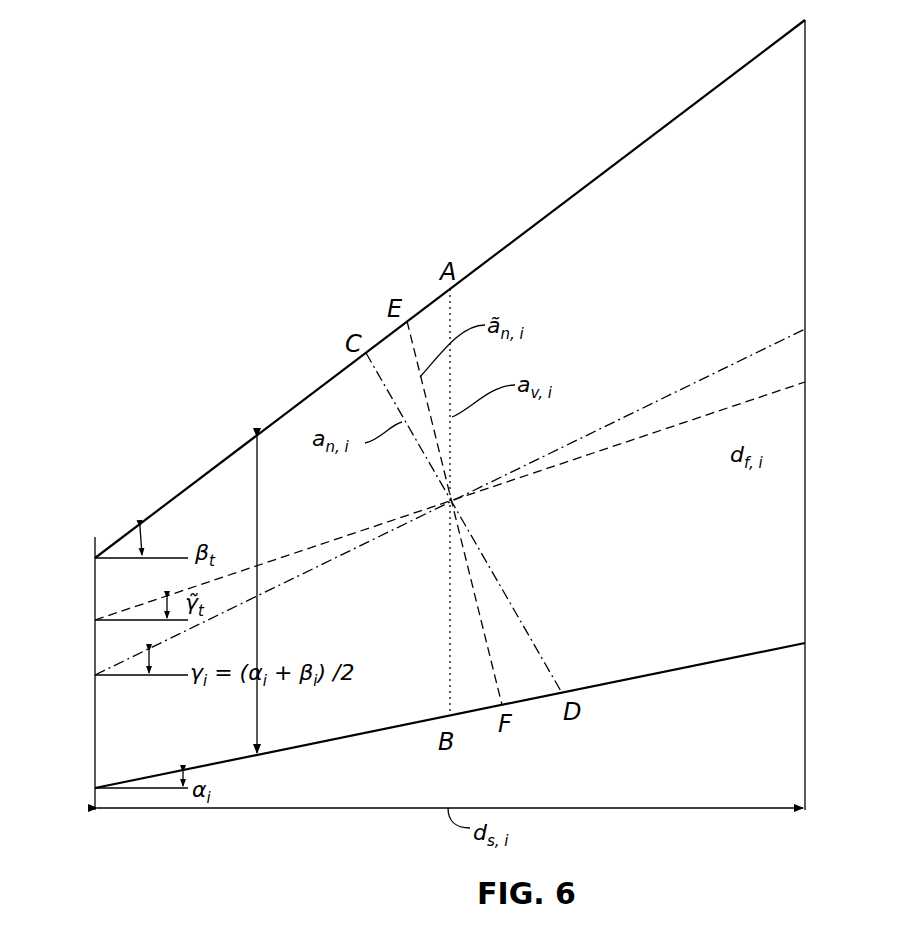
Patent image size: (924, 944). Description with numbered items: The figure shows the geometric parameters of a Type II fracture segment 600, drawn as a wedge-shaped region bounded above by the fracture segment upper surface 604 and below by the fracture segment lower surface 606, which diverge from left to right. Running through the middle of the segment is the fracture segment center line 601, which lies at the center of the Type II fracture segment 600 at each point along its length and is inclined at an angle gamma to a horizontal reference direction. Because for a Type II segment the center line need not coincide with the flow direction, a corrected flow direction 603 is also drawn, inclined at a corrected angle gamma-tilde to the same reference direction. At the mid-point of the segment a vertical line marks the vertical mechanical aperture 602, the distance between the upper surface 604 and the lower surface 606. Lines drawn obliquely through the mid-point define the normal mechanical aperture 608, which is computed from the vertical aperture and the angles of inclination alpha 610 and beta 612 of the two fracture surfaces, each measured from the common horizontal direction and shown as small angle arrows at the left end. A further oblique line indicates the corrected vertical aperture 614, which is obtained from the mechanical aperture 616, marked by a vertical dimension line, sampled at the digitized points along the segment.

The Type II fracture segment 600 is at (101, 107).
The fracture segment center line 601 is at (700, 380).
The vertical mechanical aperture 602 is at (449, 633).
The corrected flow direction 603 is at (755, 397).
The fracture segment upper surface 604 is at (626, 155).
The fracture segment lower surface 606 is at (742, 657).
The normal mechanical aperture 608 is at (470, 568).
The angle of inclination alpha 610 is at (190, 782).
The angle of inclination beta 612 is at (147, 545).
The corrected vertical aperture 614 is at (383, 393).
The mechanical aperture 616 is at (257, 612).